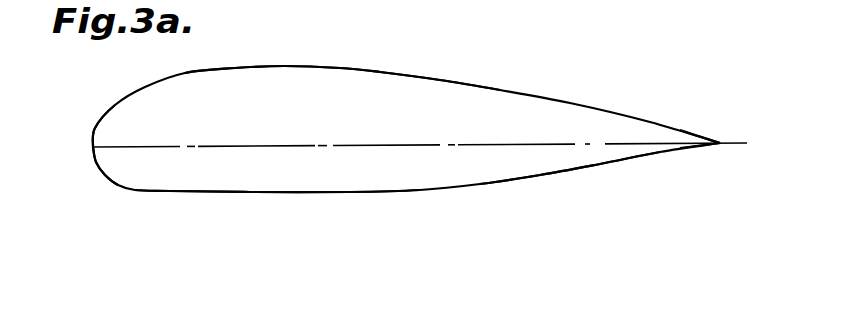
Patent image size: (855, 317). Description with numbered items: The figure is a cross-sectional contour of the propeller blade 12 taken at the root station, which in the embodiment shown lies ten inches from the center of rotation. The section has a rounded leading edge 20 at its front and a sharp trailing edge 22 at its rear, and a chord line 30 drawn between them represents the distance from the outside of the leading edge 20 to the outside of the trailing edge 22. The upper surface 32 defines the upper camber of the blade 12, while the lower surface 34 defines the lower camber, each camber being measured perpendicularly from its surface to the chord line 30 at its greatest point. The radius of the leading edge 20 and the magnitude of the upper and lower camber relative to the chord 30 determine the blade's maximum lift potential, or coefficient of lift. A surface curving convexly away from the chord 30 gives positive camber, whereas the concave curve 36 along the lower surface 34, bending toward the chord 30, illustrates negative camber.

The blade 12 is at (113, 106).
The leading edge 20 is at (96, 165).
The trailing edge 22 is at (720, 146).
The chord line 30 is at (515, 143).
The upper surface 32 is at (383, 72).
The lower surface 34 is at (136, 189).
The curve 36 is at (558, 175).